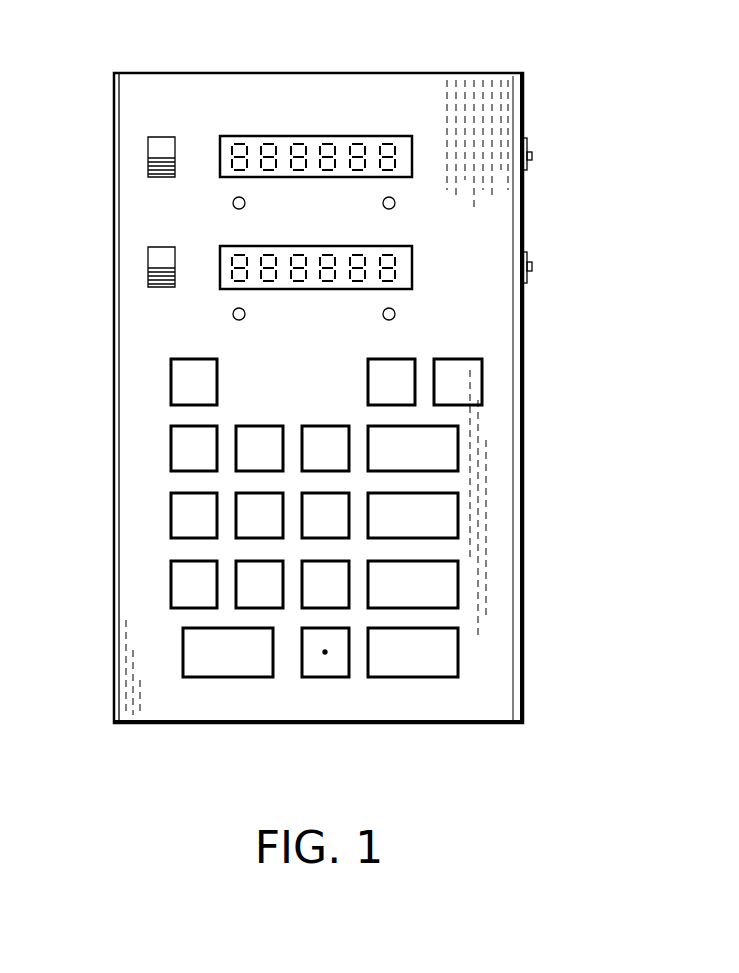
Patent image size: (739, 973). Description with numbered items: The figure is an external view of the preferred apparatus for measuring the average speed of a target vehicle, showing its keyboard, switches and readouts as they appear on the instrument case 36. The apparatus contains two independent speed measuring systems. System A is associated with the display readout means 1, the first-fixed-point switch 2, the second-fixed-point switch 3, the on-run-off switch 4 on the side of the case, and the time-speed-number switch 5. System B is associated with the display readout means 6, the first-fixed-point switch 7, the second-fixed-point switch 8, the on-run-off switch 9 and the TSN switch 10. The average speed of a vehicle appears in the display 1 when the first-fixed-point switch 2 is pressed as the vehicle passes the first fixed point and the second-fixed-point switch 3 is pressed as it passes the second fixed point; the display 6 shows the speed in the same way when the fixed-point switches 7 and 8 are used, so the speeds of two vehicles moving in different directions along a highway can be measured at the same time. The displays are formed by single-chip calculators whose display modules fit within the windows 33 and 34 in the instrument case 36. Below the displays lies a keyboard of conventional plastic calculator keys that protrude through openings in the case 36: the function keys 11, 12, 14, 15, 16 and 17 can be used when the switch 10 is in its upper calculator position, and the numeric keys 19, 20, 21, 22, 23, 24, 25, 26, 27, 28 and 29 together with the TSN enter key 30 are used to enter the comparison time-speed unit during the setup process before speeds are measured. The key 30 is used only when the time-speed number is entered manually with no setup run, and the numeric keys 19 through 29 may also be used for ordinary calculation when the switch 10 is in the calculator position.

The display readout means 1 is at (437, 143).
The first-fixed-point switch 2 is at (233, 203).
The second-fixed-point switch 3 is at (395, 203).
The on-run-off switch 4 is at (538, 149).
The time-speed-number (TSN) switch 5 is at (138, 151).
The display readout means 6 is at (432, 283).
The first-fixed-point switch 7 is at (233, 314).
The second-fixed-point switch 8 is at (396, 313).
The on-run-off switch 9 is at (538, 269).
The TSN switch 10 is at (138, 264).
The function key 11 is at (405, 359).
The function key 12 is at (482, 375).
The function key 14 is at (458, 453).
The function key 15 is at (458, 518).
The function key 16 is at (458, 586).
The function key 17 is at (458, 658).
The numeric key 19 is at (338, 677).
The numeric key 20 is at (183, 657).
The numeric key 21 is at (171, 583).
The numeric key 22 is at (258, 608).
The numeric key 23 is at (307, 561).
The numeric key 24 is at (171, 517).
The numeric key 25 is at (268, 493).
The numeric key 26 is at (335, 493).
The numeric key 27 is at (171, 442).
The numeric key 28 is at (255, 426).
The numeric key 29 is at (328, 427).
The TSN enter key 30 is at (171, 372).
The window 33 is at (373, 136).
The window 34 is at (412, 248).
The instrument case 36 is at (483, 723).